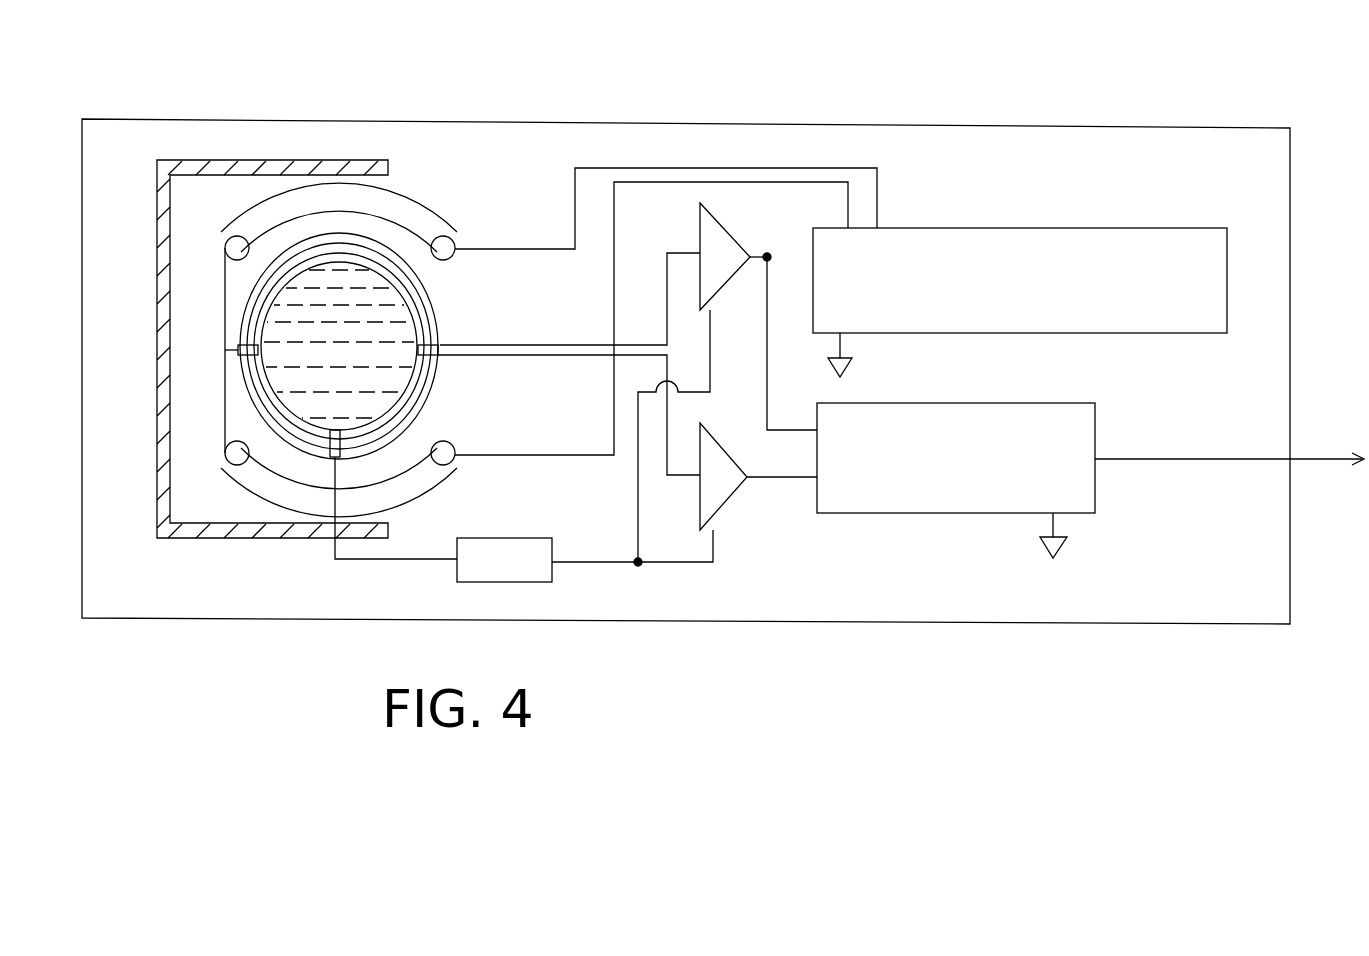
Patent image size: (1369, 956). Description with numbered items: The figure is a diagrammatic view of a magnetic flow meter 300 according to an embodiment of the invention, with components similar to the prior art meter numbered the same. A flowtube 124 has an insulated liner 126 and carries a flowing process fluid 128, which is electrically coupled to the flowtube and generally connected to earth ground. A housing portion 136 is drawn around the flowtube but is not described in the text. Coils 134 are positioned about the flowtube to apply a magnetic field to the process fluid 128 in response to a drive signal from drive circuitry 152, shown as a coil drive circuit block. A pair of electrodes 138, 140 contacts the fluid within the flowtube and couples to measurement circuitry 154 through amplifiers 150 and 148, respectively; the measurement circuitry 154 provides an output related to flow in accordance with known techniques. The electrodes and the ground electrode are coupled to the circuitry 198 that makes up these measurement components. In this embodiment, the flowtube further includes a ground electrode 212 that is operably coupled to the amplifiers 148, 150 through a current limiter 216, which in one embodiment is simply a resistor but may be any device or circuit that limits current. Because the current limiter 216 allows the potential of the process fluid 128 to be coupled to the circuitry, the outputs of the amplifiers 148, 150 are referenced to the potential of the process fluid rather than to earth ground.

The magnetic flow meter 300 is at (1032, 93).
The circuitry 198 is at (1185, 183).
The insulated liner 126 is at (314, 348).
The housing wall 136 is at (170, 532).
The coils 134 is at (253, 212).
The flowtube 124 is at (347, 240).
The process fluid 128 is at (358, 297).
The electrode 140 is at (250, 354).
The electrode 138 is at (446, 344).
The ground electrode 212 is at (350, 456).
The current limiter 216 is at (485, 583).
The amplifier 148 is at (720, 222).
The amplifier 150 is at (723, 502).
The drive circuitry 152 is at (988, 228).
The measurement circuitry 154 is at (1095, 477).